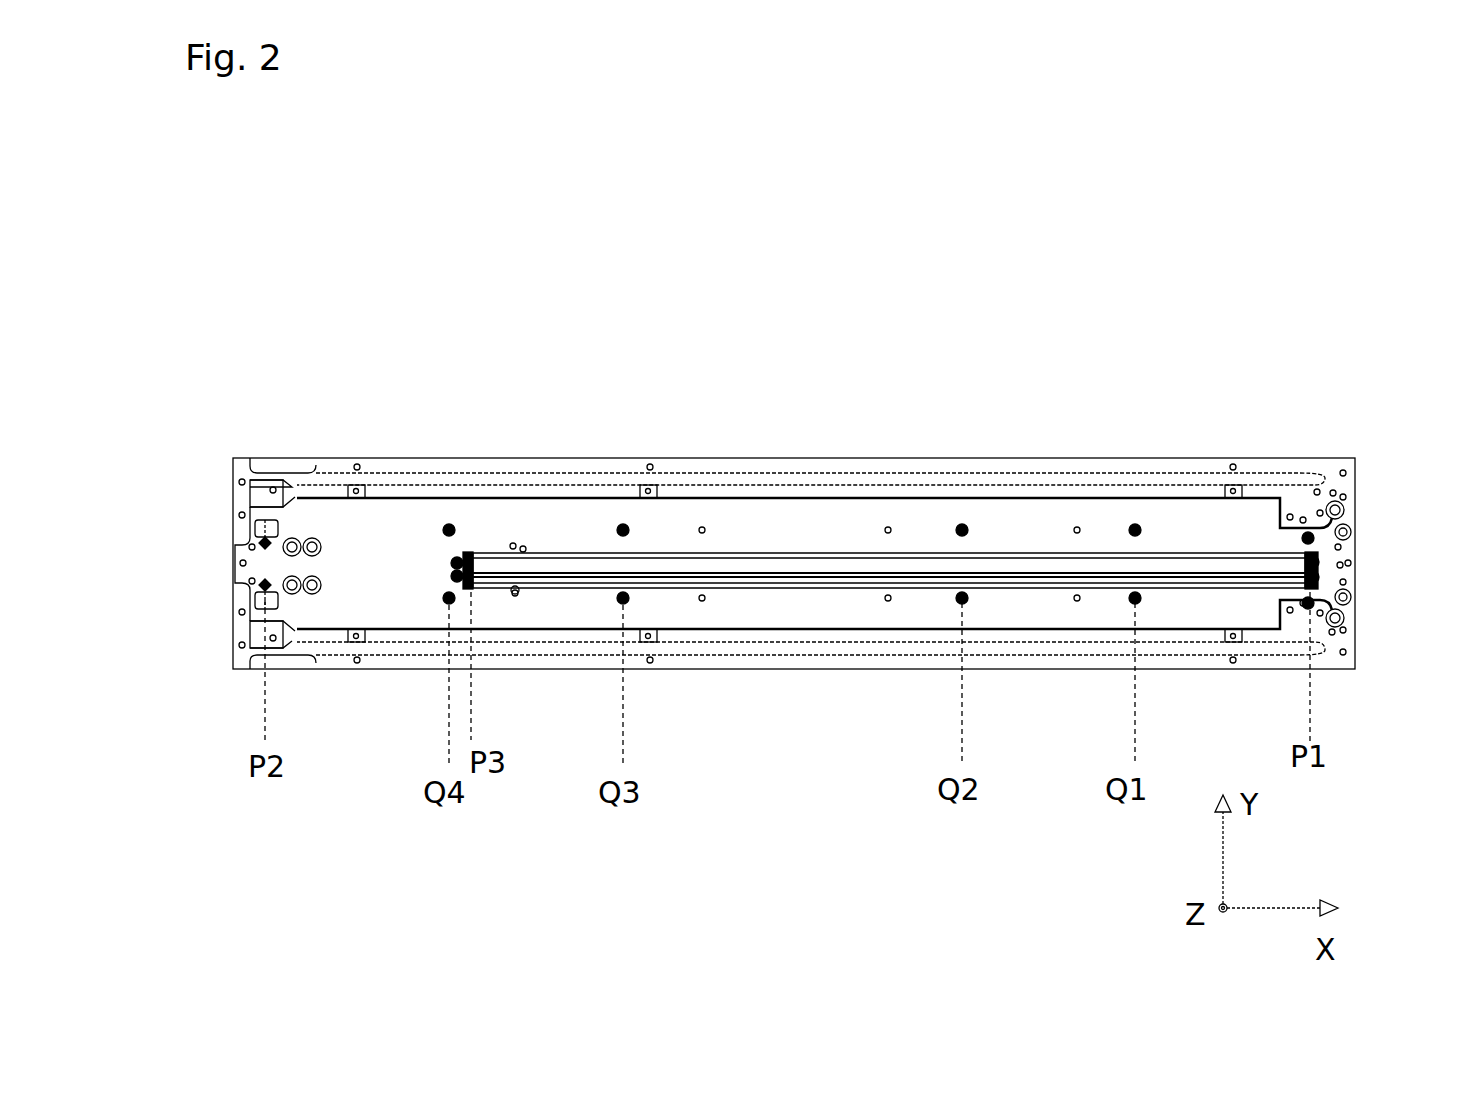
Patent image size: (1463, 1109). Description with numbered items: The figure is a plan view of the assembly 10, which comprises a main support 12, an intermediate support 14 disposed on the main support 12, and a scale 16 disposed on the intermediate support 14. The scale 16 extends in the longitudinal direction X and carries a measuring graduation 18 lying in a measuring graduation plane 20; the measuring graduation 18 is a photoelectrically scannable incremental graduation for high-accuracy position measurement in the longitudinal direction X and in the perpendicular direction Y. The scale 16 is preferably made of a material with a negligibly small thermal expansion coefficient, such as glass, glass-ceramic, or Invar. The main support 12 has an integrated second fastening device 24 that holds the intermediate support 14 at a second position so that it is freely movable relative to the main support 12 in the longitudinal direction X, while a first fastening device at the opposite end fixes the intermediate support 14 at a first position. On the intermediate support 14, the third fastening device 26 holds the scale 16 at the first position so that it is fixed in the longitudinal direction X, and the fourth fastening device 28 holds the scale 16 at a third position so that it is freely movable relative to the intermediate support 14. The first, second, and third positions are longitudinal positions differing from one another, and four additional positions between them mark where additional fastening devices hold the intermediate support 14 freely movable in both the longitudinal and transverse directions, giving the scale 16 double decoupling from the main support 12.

The assembly 10 is at (300, 330).
The main support 12 is at (423, 650).
The intermediate support 14 is at (423, 550).
The scale 16 is at (513, 590).
The measuring graduation 18 is at (597, 560).
The measuring graduation plane 20 is at (635, 563).
The second fastening device 24 is at (262, 597).
The third fastening device 26 is at (1313, 557).
The fourth fastening device 28 is at (460, 550).